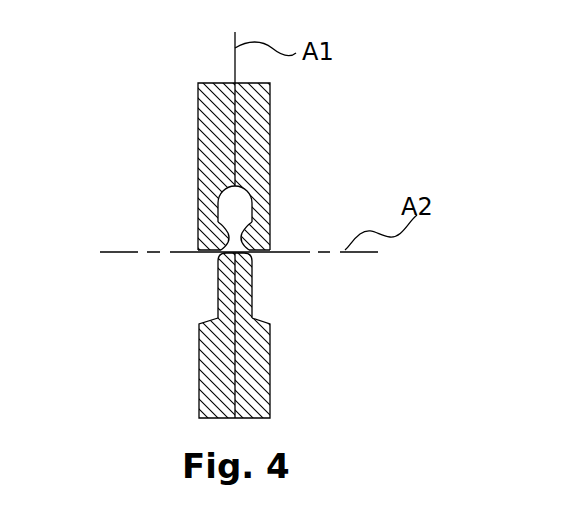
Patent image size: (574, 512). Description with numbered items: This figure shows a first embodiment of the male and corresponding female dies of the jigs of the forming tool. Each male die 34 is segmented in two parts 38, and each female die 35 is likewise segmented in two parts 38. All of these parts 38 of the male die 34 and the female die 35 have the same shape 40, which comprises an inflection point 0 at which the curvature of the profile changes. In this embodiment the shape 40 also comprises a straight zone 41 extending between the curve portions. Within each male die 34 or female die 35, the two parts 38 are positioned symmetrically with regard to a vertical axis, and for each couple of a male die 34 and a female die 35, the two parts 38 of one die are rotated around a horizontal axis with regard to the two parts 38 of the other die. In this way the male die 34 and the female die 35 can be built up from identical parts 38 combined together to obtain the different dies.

The male die 34 is at (153, 349).
The female die 35 is at (160, 130).
The part 38 is at (221, 250).
The shape 40 is at (222, 228).
The straight zone 41 is at (255, 295).
The inflection point 0 is at (237, 259).